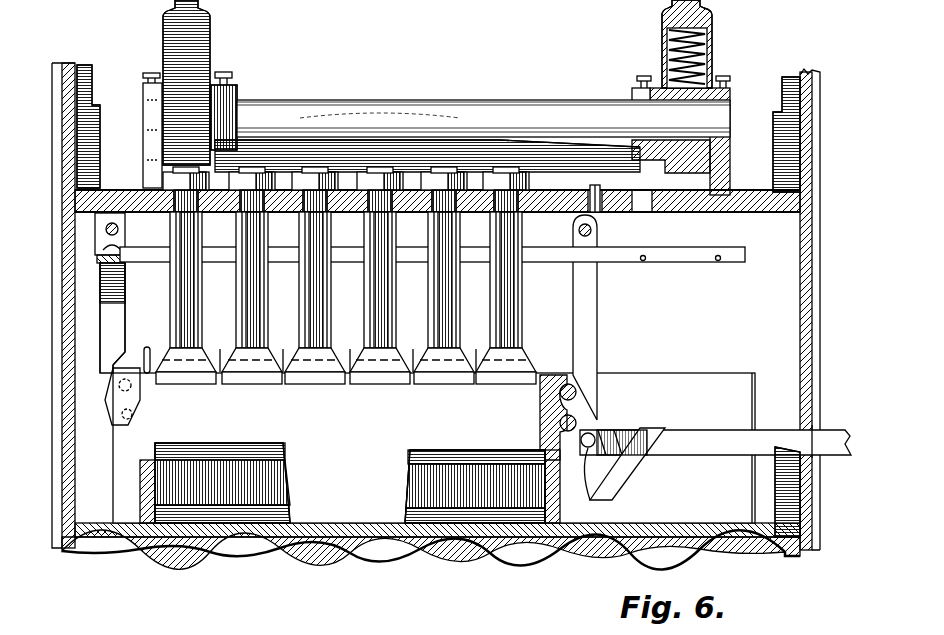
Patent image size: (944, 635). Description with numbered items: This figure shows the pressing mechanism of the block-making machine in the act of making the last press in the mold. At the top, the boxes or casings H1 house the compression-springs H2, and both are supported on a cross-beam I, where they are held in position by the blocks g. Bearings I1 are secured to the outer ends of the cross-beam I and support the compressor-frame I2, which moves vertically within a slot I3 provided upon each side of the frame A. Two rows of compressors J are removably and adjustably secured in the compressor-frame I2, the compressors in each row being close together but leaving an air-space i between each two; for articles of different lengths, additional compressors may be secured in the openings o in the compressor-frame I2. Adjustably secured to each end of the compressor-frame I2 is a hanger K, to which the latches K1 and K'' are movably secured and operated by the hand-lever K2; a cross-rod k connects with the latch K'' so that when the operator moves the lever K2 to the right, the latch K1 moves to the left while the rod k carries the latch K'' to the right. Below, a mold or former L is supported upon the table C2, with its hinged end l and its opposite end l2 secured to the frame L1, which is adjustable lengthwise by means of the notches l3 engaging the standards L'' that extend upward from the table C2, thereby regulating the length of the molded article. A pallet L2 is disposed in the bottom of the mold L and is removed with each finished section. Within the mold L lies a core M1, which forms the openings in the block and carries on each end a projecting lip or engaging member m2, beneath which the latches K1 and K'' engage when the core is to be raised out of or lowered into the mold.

The frame A is at (800, 317).
The mold or former L is at (437, 568).
The pallet L2 is at (230, 528).
The table C2 is at (368, 548).
The core M1 is at (380, 436).
The end of mold l is at (143, 470).
The opposite end of mold l2 is at (540, 468).
The projecting lip or engaging member m2 is at (580, 380).
The frame L1 is at (696, 452).
The standards L'' is at (780, 452).
The notches l3 is at (815, 440).
The hanger K is at (320, 237).
The hand-lever K2 is at (98, 260).
The latch K1 is at (110, 307).
The latch K'' is at (611, 317).
The cross-rod k is at (545, 262).
The compressor-frame I2 is at (285, 182).
The compressors J is at (478, 188).
The air-space i is at (220, 350).
The openings o is at (710, 232).
The slot I3 is at (97, 178).
The bearings I1 is at (147, 130).
The boxes or casings H1 is at (203, 37).
The compression-springs H2 is at (708, 63).
The blocks g is at (245, 98).
The cross-beam I is at (392, 108).